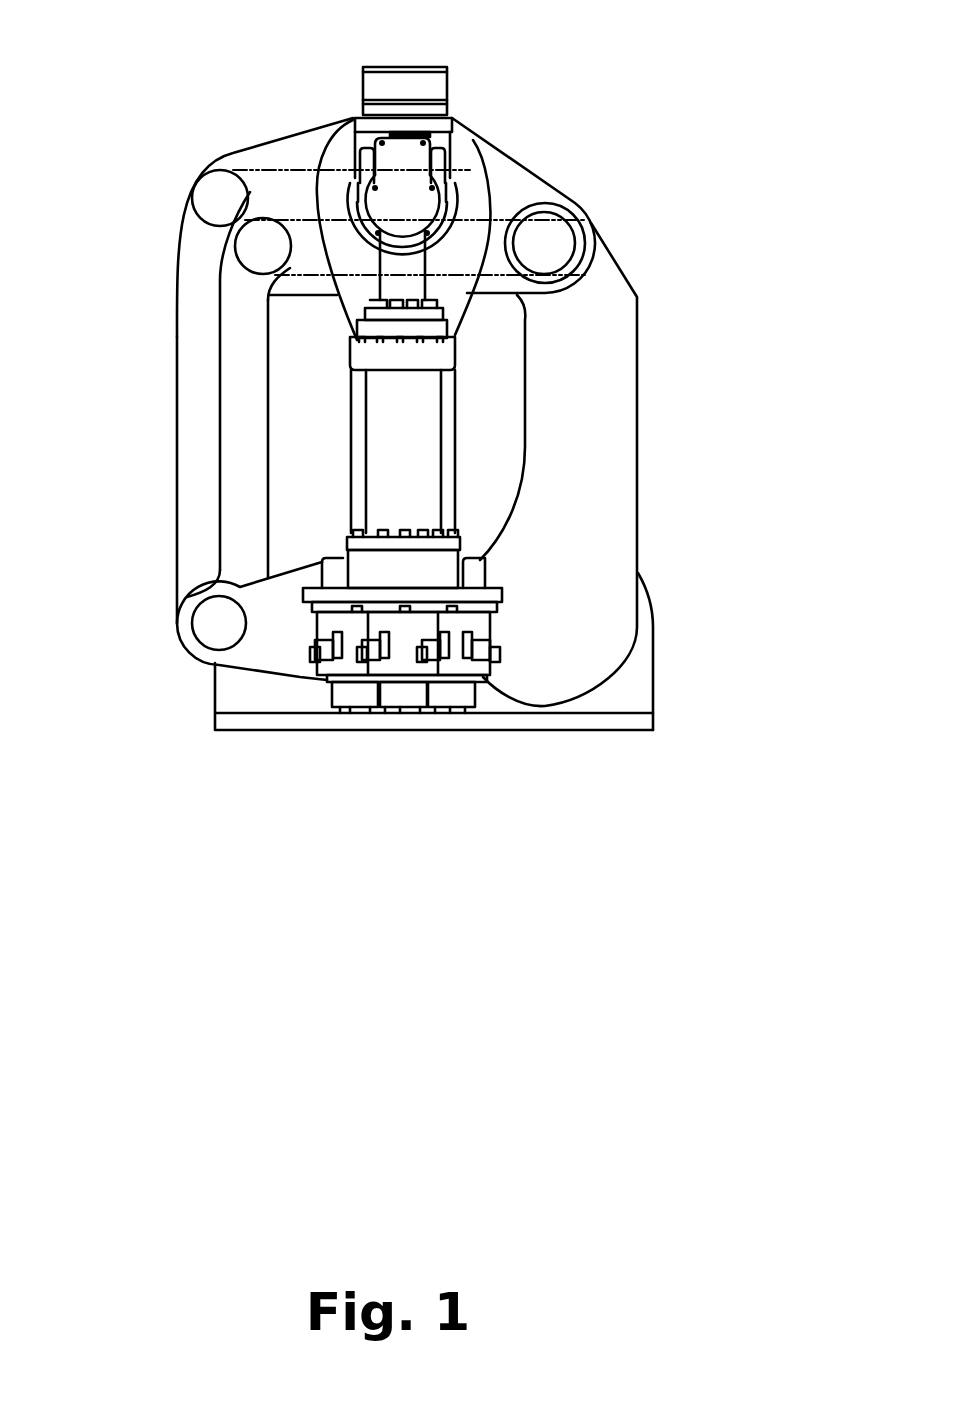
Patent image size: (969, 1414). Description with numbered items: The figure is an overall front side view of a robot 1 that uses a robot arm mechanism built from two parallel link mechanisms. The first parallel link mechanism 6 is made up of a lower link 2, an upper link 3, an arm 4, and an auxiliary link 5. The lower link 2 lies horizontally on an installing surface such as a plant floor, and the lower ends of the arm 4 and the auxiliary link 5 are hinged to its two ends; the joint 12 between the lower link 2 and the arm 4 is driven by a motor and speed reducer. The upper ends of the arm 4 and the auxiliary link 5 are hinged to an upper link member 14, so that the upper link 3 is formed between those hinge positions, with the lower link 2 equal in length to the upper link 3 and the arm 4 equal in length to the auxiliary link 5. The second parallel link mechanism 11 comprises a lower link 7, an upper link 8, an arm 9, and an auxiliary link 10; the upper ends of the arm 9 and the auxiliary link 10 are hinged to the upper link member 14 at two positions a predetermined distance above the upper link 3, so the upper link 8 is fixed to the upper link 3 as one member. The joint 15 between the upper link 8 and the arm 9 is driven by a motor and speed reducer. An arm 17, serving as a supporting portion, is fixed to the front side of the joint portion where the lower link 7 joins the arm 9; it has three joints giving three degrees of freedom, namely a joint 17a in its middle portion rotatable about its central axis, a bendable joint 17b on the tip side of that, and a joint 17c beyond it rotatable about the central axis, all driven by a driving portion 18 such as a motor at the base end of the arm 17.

The robot 1 is at (596, 129).
The lower link 2 is at (653, 690).
The upper link 3 is at (537, 278).
The arm (link) 4 is at (638, 420).
The auxiliary link 5 is at (220, 500).
The parallel link mechanism 6 is at (670, 492).
The lower link 7 is at (233, 665).
The upper link 8 is at (277, 167).
The arm (link) 9 is at (460, 312).
The auxiliary link 10 is at (177, 387).
The parallel link mechanism 11 is at (130, 307).
The joint 12 is at (627, 657).
The upper link member 14 is at (508, 157).
The joint 15 is at (460, 140).
The arm (supporting portion) 17 is at (455, 455).
The joint 17a is at (363, 328).
The joint 17b is at (357, 207).
The joint 17c is at (363, 100).
The driving portion 18 is at (487, 697).